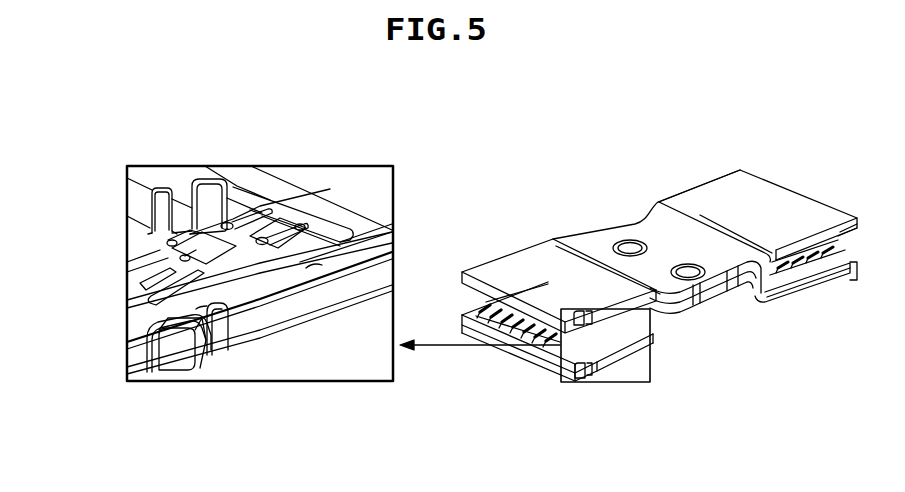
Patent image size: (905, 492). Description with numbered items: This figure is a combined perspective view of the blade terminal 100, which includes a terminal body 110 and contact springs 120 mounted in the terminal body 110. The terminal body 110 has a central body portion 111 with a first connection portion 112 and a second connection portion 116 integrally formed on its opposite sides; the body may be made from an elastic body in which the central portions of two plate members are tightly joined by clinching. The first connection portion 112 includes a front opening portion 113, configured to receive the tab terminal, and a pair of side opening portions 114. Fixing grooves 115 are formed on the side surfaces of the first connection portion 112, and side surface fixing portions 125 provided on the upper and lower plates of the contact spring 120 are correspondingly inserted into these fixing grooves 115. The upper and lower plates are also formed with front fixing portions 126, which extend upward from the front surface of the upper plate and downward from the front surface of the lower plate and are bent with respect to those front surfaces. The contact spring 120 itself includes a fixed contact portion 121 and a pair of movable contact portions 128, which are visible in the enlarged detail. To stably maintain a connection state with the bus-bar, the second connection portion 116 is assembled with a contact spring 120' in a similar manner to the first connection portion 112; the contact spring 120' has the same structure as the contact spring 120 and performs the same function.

The blade terminal 100 is at (548, 185).
The terminal body 110 is at (582, 232).
The central body portion 111 is at (610, 238).
The first connection portion 112 is at (168, 180).
The front opening portion 113 is at (146, 372).
The side opening portion 114 is at (310, 270).
The fixing groove 115 is at (232, 180).
The second connection portion 116 is at (712, 190).
The contact spring 120 is at (557, 375).
The contact spring 120' is at (806, 317).
The fixed contact portion 121 is at (273, 303).
The side surface fixing portion 125 is at (214, 178).
The front fixing portion 126 is at (143, 170).
The movable contact portion 128 is at (298, 198).